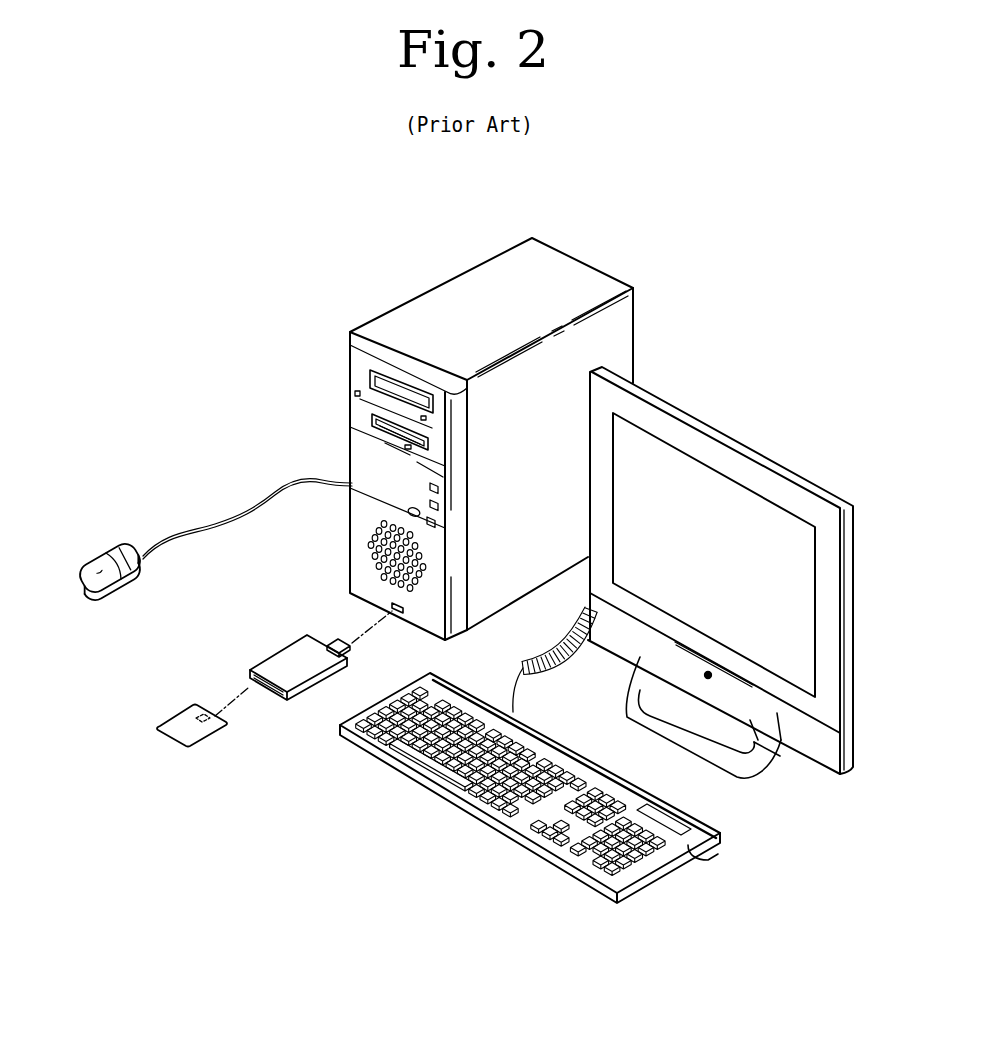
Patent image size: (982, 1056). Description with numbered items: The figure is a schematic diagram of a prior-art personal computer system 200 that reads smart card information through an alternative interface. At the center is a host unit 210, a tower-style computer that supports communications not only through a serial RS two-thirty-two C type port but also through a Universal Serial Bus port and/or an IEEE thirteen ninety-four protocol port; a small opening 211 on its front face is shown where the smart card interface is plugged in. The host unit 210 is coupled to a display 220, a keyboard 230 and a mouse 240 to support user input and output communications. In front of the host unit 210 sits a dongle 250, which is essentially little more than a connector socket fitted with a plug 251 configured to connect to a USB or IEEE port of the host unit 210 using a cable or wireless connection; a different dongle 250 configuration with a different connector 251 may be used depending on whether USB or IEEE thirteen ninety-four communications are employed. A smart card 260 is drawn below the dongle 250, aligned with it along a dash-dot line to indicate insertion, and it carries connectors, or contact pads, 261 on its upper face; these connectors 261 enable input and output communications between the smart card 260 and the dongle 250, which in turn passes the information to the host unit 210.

The personal computer system 200 is at (722, 317).
The host unit 210 is at (573, 264).
The connection slot 211 is at (397, 615).
The display 220 is at (729, 440).
The keyboard 230 is at (550, 741).
The mouse 240 is at (115, 550).
The dongle 250 is at (280, 657).
The plug 251 is at (337, 640).
The smart card 260 is at (192, 737).
The connectors (contact pads) 261 is at (197, 711).